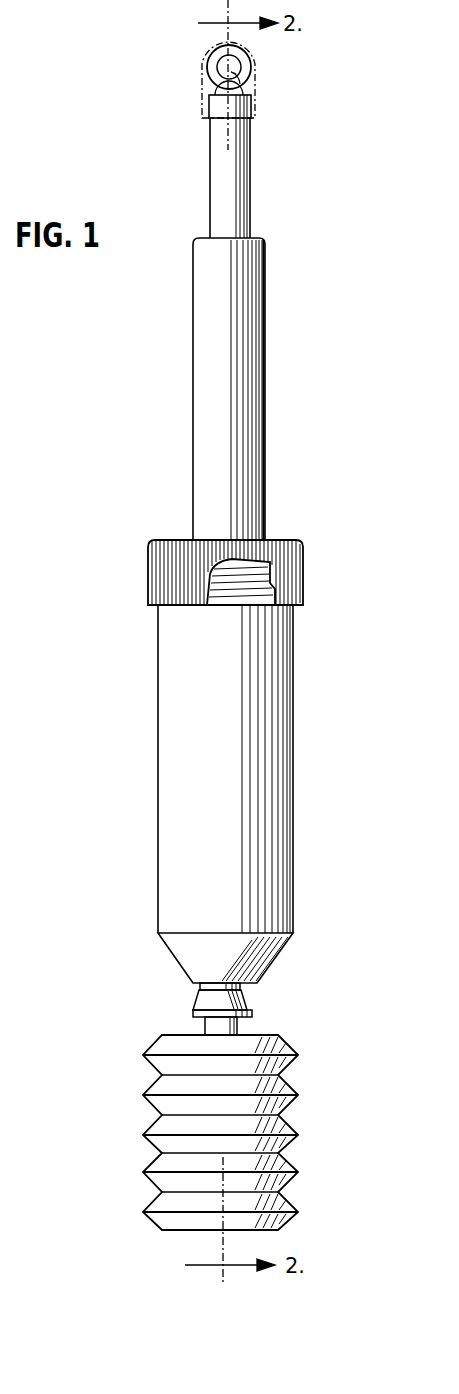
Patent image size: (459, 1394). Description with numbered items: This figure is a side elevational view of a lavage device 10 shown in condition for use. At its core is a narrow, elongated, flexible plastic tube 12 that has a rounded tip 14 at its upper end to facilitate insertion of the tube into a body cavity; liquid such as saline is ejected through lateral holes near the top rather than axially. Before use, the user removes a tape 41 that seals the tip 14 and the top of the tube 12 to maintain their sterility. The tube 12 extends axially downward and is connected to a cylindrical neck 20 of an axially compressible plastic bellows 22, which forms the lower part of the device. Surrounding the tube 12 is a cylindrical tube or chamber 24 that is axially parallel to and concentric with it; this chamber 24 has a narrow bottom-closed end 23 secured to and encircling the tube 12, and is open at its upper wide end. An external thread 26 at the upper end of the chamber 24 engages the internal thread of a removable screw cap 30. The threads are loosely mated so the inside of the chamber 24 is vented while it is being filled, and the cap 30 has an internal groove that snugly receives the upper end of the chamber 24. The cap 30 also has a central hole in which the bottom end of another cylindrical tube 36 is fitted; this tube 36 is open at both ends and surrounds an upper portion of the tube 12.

The lavage device 10 is at (272, 257).
The flexible plastic tube 12 is at (222, 177).
The rounded tip 14 is at (247, 68).
The cylindrical neck 20 is at (196, 1003).
The bellows 22 is at (160, 1123).
The bottom-closed end 23 is at (258, 963).
The cylindrical tube 24 is at (175, 750).
The external thread 26 is at (226, 586).
The screw cap 30 is at (285, 547).
The cylindrical tube 36 is at (208, 385).
The tape 41 is at (200, 72).